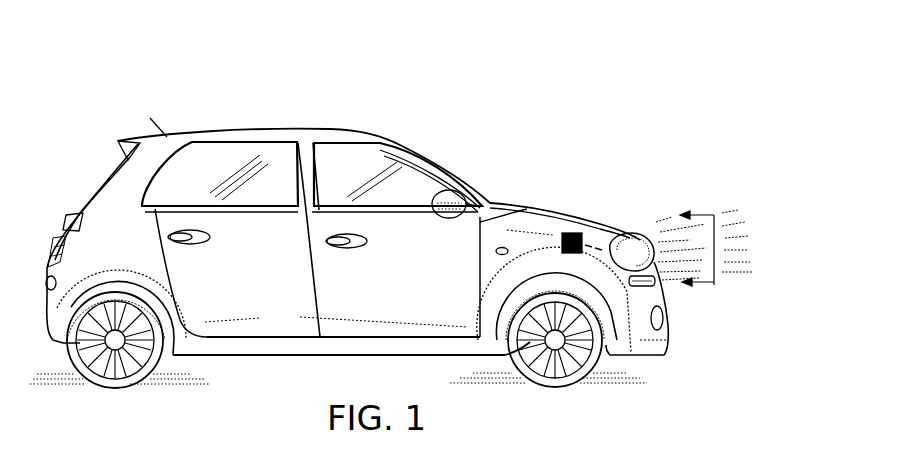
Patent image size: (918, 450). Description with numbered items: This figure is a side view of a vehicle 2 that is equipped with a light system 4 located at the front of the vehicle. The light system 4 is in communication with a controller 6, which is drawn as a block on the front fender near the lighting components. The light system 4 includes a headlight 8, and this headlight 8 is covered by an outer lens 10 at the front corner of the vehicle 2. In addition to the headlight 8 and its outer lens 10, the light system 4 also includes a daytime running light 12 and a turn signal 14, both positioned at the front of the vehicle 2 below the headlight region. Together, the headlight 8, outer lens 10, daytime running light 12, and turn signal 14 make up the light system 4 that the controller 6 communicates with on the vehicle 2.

The vehicle 2 is at (507, 98).
The light system 4 is at (670, 187).
The controller 6 is at (573, 232).
The headlight 8 is at (637, 227).
The outer lens 10 is at (647, 240).
The daytime running light 12 is at (655, 282).
The turn signal 14 is at (638, 285).